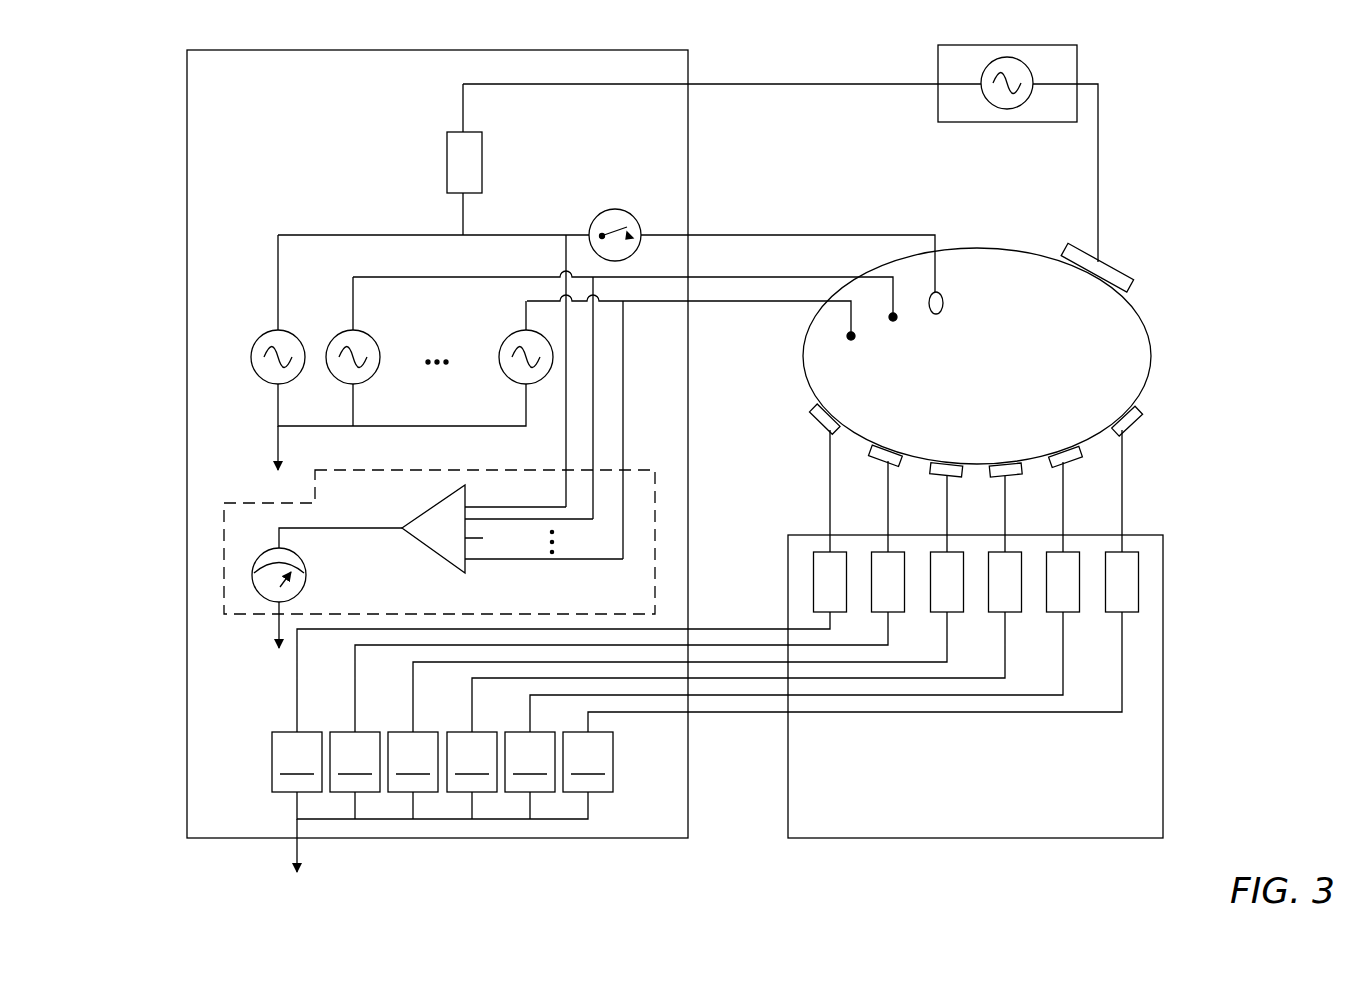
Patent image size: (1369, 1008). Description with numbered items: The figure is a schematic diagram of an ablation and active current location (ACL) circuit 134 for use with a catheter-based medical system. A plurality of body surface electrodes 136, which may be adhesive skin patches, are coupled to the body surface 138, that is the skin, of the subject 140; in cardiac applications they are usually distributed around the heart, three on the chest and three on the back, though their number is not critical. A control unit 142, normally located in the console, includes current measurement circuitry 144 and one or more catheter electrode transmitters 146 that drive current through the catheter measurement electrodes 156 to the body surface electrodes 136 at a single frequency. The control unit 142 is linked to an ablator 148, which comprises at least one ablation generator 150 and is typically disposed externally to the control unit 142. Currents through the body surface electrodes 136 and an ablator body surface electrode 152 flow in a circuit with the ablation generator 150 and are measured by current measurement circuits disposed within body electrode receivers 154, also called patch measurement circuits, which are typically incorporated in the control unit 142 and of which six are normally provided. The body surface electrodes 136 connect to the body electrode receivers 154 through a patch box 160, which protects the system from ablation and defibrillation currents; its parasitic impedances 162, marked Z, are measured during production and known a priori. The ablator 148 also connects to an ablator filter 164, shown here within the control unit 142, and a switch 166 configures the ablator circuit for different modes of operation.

The ablation and active current location (ACL) circuit 134 is at (133, 95).
The body surface electrodes 136 is at (818, 422).
The body surface 138 is at (1152, 372).
The subject 140 is at (997, 248).
The control unit 142 is at (187, 760).
The current measurement circuitry 144 is at (224, 562).
The catheter electrode transmitters 146 is at (298, 338).
The ablator 148 is at (1077, 47).
The ablation generator 150 is at (1000, 109).
The ablator body surface electrode 152 is at (1124, 278).
The body electrode receivers 154 is at (442, 762).
The measurement electrodes 156 is at (936, 315).
The patch box 160 is at (1163, 752).
The patch box parasitic impedances 162 is at (813, 578).
The ablator filter 164 is at (447, 160).
The switch 166 is at (616, 209).